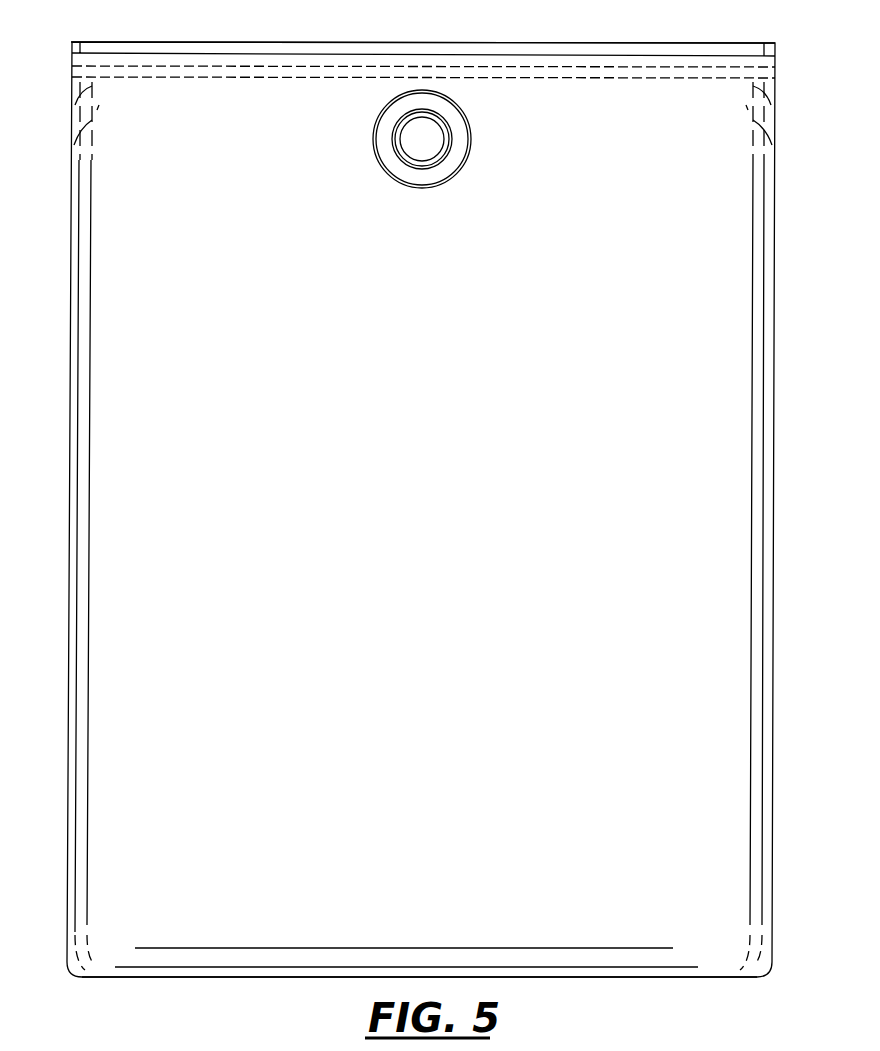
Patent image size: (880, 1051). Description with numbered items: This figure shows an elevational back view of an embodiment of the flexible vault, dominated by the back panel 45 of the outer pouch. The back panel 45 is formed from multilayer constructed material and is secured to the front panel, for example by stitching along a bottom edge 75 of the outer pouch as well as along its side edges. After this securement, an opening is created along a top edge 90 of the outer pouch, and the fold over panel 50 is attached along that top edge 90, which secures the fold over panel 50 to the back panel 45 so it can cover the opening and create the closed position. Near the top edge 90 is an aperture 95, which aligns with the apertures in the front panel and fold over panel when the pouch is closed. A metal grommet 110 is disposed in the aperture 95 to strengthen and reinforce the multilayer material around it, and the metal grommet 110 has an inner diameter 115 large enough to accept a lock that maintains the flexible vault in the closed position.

The back panel 45 is at (107, 270).
The fold over panel 50 is at (108, 47).
The bottom edge 75 is at (240, 977).
The top edge 90 is at (218, 52).
The aperture 95 is at (420, 133).
The metal grommet 110 is at (450, 112).
The inner diameter 115 is at (390, 131).